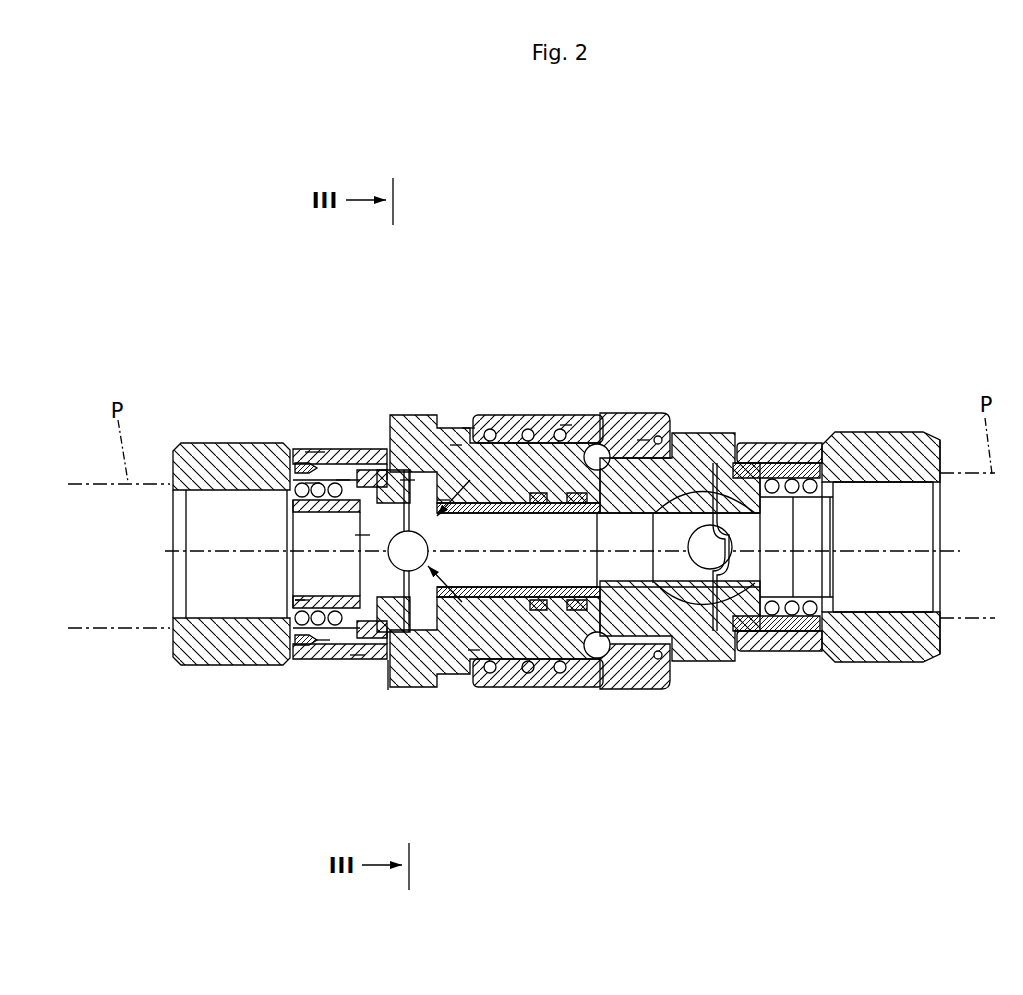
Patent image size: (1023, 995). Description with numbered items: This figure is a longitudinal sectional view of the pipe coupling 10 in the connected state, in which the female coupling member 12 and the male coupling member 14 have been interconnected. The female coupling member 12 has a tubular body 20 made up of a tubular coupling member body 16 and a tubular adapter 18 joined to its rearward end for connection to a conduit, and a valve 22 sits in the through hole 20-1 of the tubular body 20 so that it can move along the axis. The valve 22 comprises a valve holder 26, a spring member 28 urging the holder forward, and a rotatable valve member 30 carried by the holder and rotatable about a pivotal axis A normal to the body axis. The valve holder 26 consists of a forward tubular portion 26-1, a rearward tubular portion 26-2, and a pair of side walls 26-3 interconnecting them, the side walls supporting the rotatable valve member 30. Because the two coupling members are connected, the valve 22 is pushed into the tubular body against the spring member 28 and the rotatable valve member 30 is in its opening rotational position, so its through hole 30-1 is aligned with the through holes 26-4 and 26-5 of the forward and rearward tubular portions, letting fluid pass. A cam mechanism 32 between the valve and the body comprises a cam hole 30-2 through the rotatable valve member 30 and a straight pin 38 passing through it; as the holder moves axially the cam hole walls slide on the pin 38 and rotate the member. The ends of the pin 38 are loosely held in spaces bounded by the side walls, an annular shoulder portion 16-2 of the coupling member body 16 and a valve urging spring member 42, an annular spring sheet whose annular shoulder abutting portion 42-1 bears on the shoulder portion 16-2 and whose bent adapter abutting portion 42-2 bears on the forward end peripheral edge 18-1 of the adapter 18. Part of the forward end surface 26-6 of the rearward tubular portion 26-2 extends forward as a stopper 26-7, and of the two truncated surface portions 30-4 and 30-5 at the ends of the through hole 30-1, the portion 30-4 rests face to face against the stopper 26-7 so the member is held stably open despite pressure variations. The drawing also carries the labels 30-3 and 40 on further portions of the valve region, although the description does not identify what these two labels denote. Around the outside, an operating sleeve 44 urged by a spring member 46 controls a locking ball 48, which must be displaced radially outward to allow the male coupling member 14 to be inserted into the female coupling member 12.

The pipe coupling 10 is at (662, 172).
The female coupling member 12 is at (486, 196).
The male coupling member 14 is at (783, 326).
The coupling member body 16 is at (468, 428).
The annular shoulder portion 16-2 is at (388, 690).
The adapter 18 is at (190, 444).
The forward end peripheral edge 18-1 is at (393, 640).
The tubular body 20 is at (406, 414).
The through hole 20-1 is at (455, 445).
The valve 22 is at (372, 476).
The valve holder 26 is at (522, 470).
The forward tubular portion 26-1 is at (532, 470).
The rearward tubular portion 26-2 is at (317, 456).
The side wall 26-3 is at (300, 610).
The through hole of forward tubular portion 26-4 is at (643, 440).
The through hole of rearward tubular portion 26-5 is at (296, 464).
The forward end surface 26-6 is at (365, 540).
The stopper 26-7 is at (322, 640).
The spring member 28 is at (312, 485).
The rotatable valve member 30 is at (428, 630).
The through hole 30-1 is at (472, 650).
The cam hole 30-2 is at (440, 503).
The valve member step 30-3 is at (355, 660).
The truncated surface portion 30-4 is at (300, 606).
The truncated surface portion 30-5 is at (405, 480).
The cam mechanism 32 is at (575, 630).
The pin 38 is at (532, 665).
The seal 40 is at (500, 470).
The valve urging spring member 42 is at (400, 600).
The annular shoulder abutting portion 42-1 is at (440, 500).
The adapter abutting portion 42-2 is at (343, 480).
The operating sleeve 44 is at (660, 412).
The spring member 46 is at (566, 425).
The locking ball 48 is at (606, 430).
The pivotal axis A is at (480, 650).